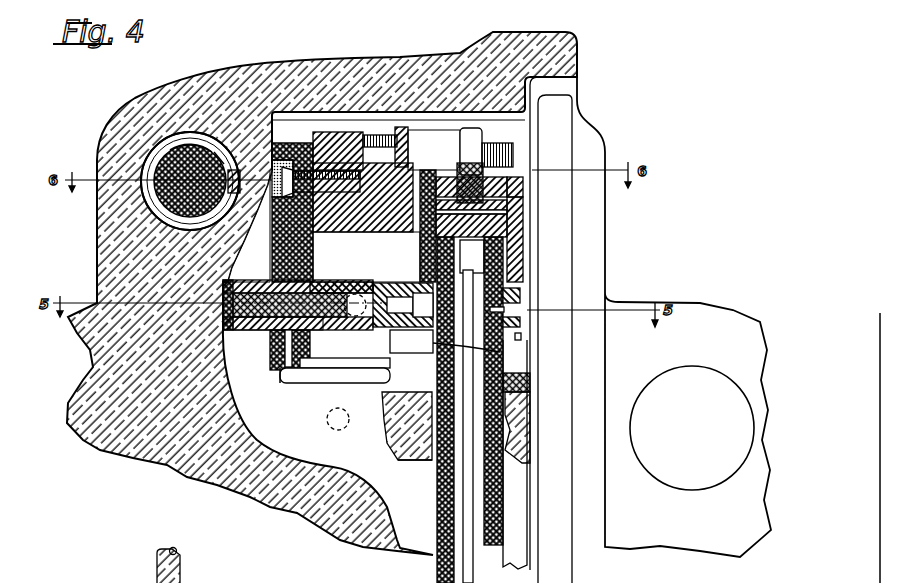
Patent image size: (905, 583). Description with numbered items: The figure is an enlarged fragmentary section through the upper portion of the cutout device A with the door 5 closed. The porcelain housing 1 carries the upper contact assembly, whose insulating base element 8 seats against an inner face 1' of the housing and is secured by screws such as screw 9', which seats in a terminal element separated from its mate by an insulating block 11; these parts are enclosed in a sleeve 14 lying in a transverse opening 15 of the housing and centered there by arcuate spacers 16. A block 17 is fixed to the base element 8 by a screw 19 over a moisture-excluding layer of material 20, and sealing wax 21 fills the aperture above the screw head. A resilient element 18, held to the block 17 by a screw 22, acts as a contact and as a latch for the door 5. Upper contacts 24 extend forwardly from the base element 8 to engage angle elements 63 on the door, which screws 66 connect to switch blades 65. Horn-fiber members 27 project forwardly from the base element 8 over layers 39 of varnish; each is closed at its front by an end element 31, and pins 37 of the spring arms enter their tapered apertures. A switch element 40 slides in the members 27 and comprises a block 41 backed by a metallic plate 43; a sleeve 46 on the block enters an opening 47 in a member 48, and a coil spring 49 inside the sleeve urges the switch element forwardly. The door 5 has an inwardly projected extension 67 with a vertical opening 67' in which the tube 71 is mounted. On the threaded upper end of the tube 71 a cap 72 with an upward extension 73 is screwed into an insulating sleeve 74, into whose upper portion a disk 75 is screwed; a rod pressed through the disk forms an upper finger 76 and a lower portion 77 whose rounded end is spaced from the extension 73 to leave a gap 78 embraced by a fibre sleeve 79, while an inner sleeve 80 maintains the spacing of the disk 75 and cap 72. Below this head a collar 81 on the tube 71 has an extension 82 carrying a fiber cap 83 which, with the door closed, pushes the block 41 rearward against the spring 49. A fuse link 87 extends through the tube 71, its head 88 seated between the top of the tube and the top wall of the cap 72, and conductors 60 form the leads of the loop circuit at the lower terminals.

The housing 1 is at (322, 293).
The inner face of the housing 1' is at (250, 226).
The door 5 is at (573, 117).
The base element 8 is at (268, 335).
The screw 9' is at (203, 113).
The insulating block 11 is at (172, 150).
The sleeve 14 is at (168, 152).
The opening 15 is at (165, 157).
The arcuate spacers 16 is at (227, 213).
The block 17 is at (392, 225).
The resilient element 18 is at (434, 150).
The screw 19 is at (272, 165).
The layer of material 20 is at (313, 140).
The sealing wax 21 is at (250, 162).
The screw 22 is at (407, 143).
The upper contacts 24 is at (390, 400).
The spaced members 27 is at (322, 372).
The end element 31 is at (500, 352).
The pins 37 is at (343, 383).
The layers of varnish 39 is at (318, 262).
The switch element 40 is at (355, 368).
The block 41 is at (373, 283).
The metallic plate 43 is at (322, 286).
The sleeve 46 is at (355, 298).
The opening 47 is at (240, 330).
The member 48 is at (233, 332).
The coil spring 49 is at (256, 337).
The conductors 60 is at (176, 559).
The angle elements 63 is at (522, 381).
The switch blades 65 is at (518, 512).
The screws 66 is at (522, 337).
The extension 67 is at (410, 468).
The opening 67' is at (534, 427).
The tube 71 is at (437, 500).
The cap 72 is at (521, 240).
The extension 73 is at (523, 225).
The sleeve 74 is at (523, 267).
The disk 75 is at (523, 182).
The finger 76 is at (477, 138).
The portion 77 is at (523, 195).
The gap 78 is at (523, 205).
The fibre sleeve 79 is at (523, 215).
The inner sleeve 80 is at (450, 185).
The collar 81 is at (520, 297).
The extension 82 is at (411, 341).
The cap 83 is at (388, 380).
The fuse link 87 is at (473, 525).
The head 88 is at (523, 250).
The cutout device A is at (583, 63).